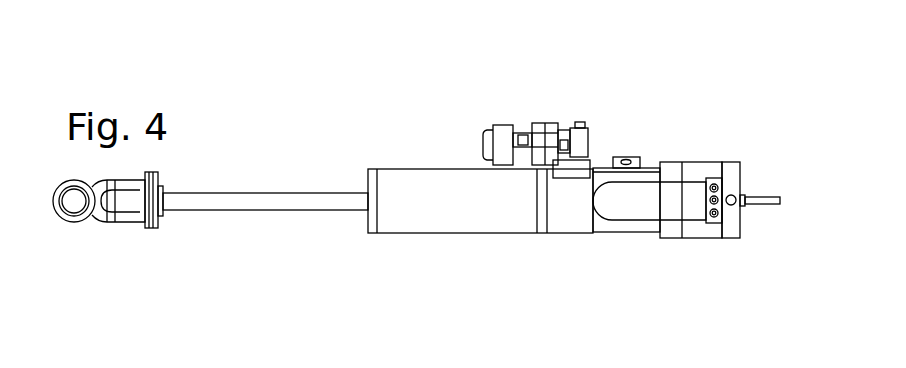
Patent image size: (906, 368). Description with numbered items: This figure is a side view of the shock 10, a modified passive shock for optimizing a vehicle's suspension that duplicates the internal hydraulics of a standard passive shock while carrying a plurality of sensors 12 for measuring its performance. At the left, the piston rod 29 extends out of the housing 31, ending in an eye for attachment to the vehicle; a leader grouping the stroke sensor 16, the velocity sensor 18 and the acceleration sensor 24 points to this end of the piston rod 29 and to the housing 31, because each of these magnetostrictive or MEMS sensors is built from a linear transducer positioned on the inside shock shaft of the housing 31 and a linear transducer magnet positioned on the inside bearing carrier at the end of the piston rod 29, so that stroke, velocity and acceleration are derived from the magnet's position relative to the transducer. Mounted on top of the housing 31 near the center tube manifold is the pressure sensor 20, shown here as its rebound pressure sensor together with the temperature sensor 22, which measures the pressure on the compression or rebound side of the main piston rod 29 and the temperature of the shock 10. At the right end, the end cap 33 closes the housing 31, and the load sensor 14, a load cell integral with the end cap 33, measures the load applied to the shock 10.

The shock 10 is at (415, 96).
The sensors 12 is at (606, 294).
The load sensor 14 is at (732, 238).
The stroke sensor 16 is at (366, 233).
The velocity sensor 18 is at (118, 201).
The acceleration sensor 24 is at (154, 200).
The pressure sensor 20 is at (580, 124).
The temperature sensor 22 is at (573, 139).
The piston rod 29 is at (217, 200).
The housing 31 is at (388, 176).
The end cap 33 is at (746, 138).